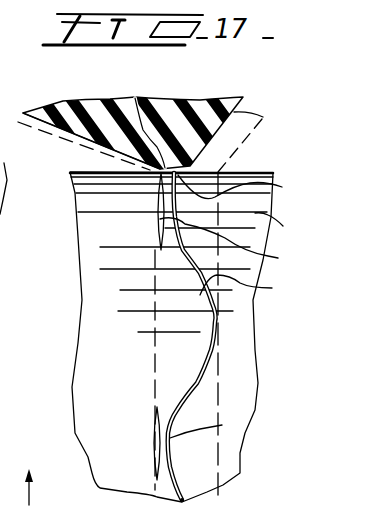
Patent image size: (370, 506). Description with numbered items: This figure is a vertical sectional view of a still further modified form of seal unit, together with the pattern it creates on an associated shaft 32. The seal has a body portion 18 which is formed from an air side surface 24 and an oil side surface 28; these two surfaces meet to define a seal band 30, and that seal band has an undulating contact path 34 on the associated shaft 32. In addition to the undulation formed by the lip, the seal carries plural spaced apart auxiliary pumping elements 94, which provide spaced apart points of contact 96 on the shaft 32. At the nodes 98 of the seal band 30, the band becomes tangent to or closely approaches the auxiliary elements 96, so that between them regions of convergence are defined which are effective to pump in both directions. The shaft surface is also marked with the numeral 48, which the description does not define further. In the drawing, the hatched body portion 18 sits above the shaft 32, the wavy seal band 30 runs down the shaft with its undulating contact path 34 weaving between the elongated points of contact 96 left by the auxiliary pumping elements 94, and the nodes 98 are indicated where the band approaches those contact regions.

The body portion 18 is at (200, 97).
The air side surface 24 is at (107, 146).
The oil side surface 28 is at (268, 117).
The seal band 30 is at (254, 188).
The associated shaft 32 is at (297, 229).
The undulating contact path 34 is at (260, 288).
The body / substrate 48 is at (186, 339).
The auxiliary pumping element 94 is at (134, 98).
The point of contact 96 is at (160, 219).
The node 98 is at (232, 328).